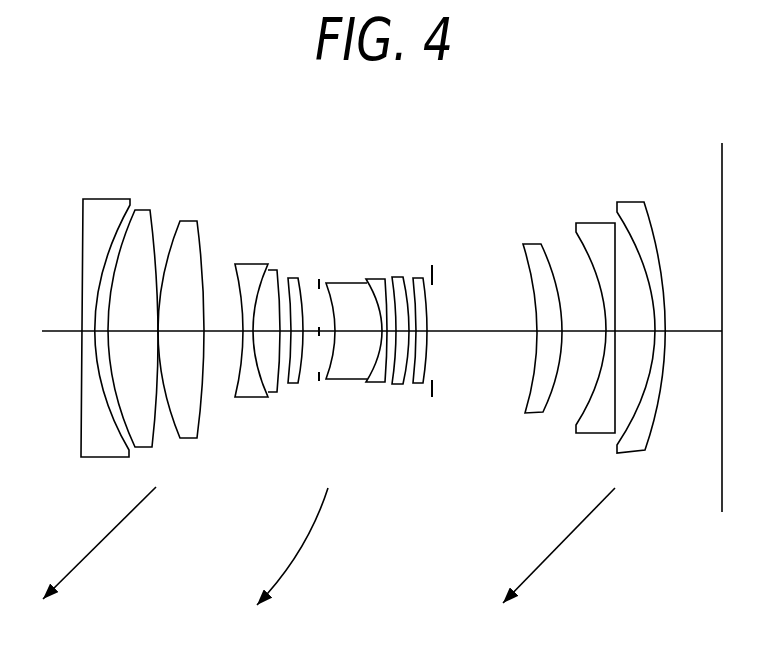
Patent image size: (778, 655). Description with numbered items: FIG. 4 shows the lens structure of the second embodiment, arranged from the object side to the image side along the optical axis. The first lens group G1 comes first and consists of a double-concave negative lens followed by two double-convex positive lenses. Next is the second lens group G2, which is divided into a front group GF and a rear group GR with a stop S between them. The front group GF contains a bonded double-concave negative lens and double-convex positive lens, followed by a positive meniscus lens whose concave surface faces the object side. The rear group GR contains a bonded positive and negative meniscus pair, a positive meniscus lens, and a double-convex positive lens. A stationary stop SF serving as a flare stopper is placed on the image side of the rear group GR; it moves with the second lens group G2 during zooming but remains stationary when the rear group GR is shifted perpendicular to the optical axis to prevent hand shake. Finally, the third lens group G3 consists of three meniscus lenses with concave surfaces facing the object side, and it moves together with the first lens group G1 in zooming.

The first lens group G1 is at (207, 175).
The second lens group G2 is at (450, 135).
The third lens group G3 is at (660, 143).
The front group of the second lens group GF is at (297, 242).
The rear group of the second lens group GR is at (442, 242).
The stop S is at (318, 283).
The stationary stop SF is at (433, 269).